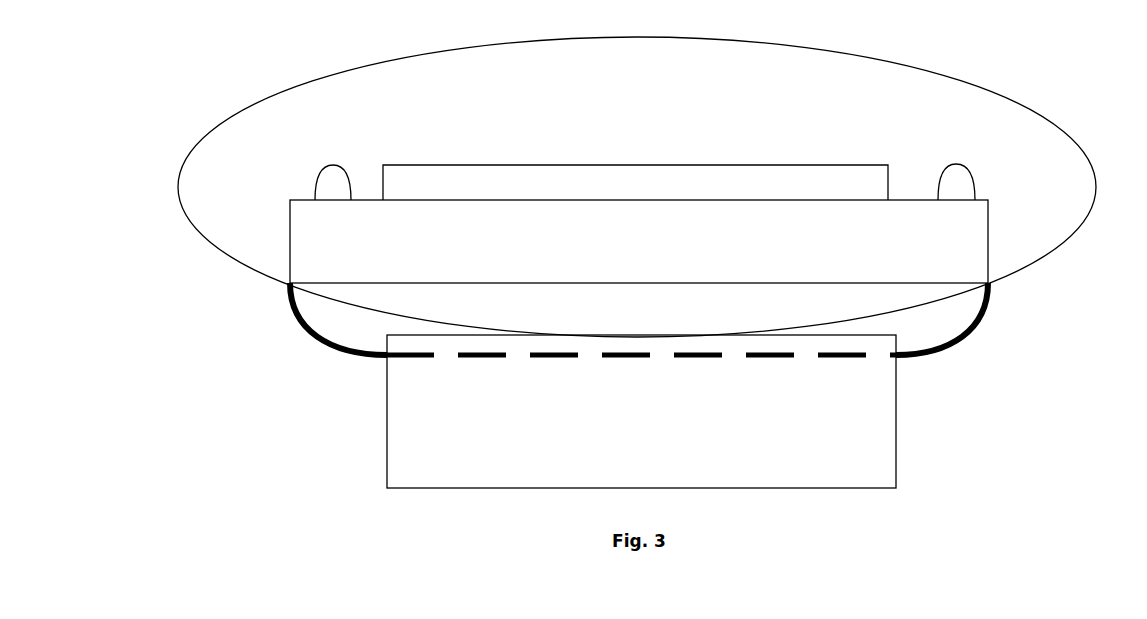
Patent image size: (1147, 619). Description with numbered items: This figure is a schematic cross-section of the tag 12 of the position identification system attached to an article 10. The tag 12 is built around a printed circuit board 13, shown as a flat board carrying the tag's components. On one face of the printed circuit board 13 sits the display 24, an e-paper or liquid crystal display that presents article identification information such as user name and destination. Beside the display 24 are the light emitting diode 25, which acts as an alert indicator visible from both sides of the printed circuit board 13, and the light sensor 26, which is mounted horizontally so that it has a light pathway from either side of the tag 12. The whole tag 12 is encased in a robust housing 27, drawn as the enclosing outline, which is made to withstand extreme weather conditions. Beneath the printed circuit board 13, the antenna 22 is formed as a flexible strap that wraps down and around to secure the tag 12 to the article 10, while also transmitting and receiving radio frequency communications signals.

The article 10 is at (897, 467).
The tag 12 is at (1021, 281).
The printed circuit board 13 is at (311, 275).
The antenna 22 is at (934, 345).
The display 24 is at (889, 165).
The light emitting diode 25 is at (977, 182).
The light sensor 26 is at (313, 187).
The robust housing 27 is at (289, 92).